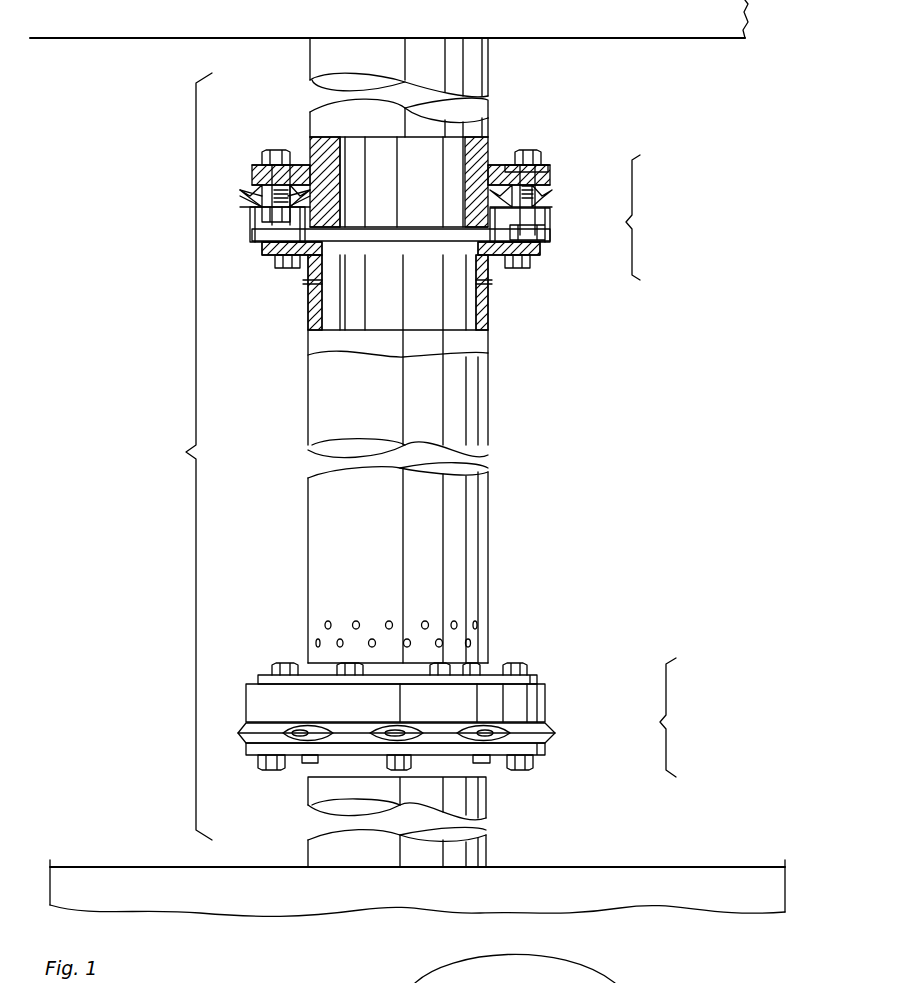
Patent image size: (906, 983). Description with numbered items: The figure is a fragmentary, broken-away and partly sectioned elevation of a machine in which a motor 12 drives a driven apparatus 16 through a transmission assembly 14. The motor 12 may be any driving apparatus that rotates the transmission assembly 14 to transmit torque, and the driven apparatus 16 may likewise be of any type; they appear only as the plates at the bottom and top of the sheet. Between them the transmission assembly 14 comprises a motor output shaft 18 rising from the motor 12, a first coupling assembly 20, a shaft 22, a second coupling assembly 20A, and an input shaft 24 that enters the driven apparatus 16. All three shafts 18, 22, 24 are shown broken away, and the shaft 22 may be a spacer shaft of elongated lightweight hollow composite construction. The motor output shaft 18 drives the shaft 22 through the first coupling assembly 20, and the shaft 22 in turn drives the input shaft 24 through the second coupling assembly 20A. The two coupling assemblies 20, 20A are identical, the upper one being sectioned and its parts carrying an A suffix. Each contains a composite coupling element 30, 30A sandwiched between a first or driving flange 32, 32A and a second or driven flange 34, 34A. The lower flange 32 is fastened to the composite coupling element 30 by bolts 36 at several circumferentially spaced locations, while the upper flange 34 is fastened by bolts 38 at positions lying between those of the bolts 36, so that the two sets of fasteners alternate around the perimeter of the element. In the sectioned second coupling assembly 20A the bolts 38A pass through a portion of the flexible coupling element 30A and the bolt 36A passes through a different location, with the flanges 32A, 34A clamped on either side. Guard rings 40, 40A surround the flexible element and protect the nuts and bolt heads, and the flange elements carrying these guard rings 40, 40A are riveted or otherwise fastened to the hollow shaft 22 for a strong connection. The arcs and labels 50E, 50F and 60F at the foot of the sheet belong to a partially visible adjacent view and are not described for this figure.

The motor 12 is at (735, 877).
The transmission assembly 14 is at (180, 456).
The driven apparatus 16 is at (720, 30).
The motor output shaft 18 is at (480, 808).
The first coupling assembly 20 is at (683, 717).
The second coupling assembly 20A is at (654, 217).
The shaft 22 is at (478, 540).
The input shaft 24 is at (473, 80).
The composite coupling element 30 is at (566, 735).
The flexible coupling element 30A is at (548, 198).
The first or driving flange 32 is at (545, 752).
The first or driving flange 32A is at (545, 242).
The second or driven flange 34 is at (543, 680).
The second or driven flange 34A is at (545, 165).
The bolt 36 is at (405, 762).
The bolt 36A is at (285, 270).
The bolt 38 is at (522, 665).
The bolt 38A is at (518, 160).
The guard ring 40 is at (540, 698).
The guard ring 40A is at (250, 222).
The arc segment E 50E is at (410, 981).
The arc segment F 50F is at (620, 980).
The element 60F is at (668, 982).